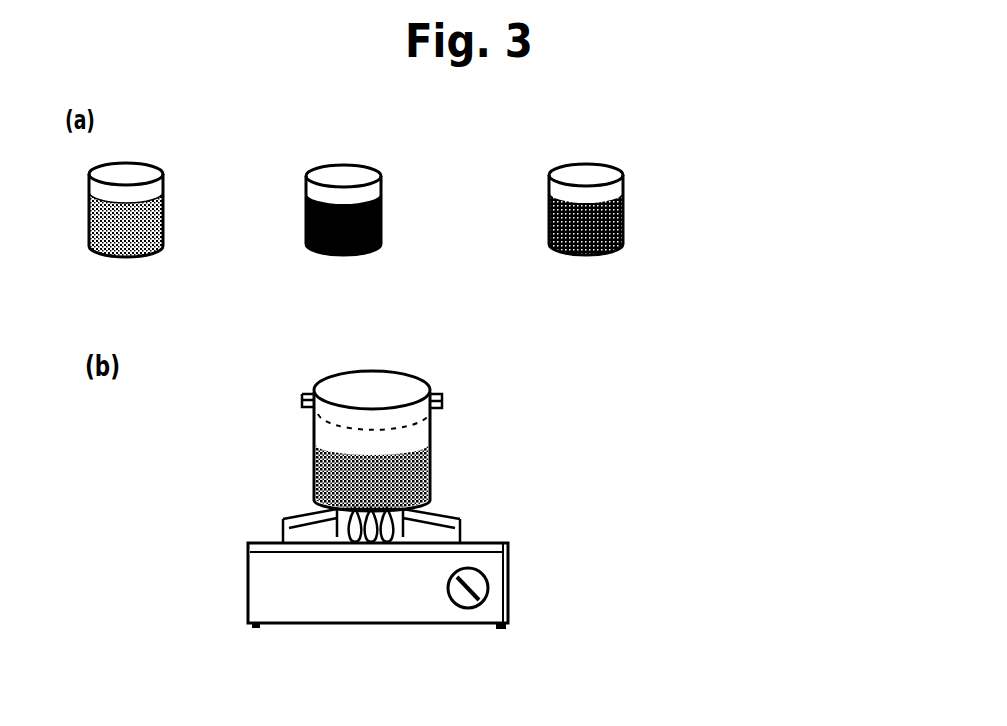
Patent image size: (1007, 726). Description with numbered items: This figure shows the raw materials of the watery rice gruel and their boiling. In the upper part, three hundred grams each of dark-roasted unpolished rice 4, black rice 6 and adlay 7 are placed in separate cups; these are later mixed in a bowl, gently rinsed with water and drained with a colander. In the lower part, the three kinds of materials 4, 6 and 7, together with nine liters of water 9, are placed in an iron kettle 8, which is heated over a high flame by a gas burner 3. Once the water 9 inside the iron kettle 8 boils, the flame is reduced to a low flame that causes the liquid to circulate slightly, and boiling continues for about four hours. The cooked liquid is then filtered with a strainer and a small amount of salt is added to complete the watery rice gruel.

The gas burner 3 is at (502, 573).
The dark-roasted unpolished rice 4 is at (548, 253).
The black rice 6 is at (157, 253).
The adlay 7 is at (386, 256).
The iron kettle 8 is at (400, 376).
The water 9 is at (430, 432).